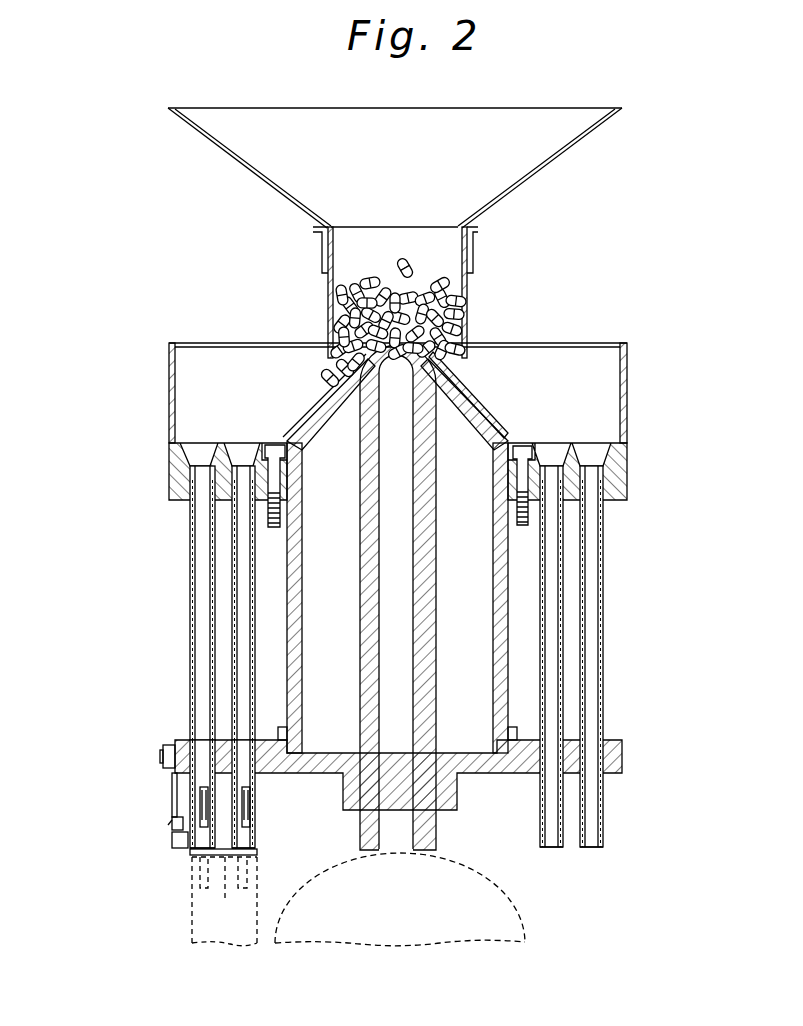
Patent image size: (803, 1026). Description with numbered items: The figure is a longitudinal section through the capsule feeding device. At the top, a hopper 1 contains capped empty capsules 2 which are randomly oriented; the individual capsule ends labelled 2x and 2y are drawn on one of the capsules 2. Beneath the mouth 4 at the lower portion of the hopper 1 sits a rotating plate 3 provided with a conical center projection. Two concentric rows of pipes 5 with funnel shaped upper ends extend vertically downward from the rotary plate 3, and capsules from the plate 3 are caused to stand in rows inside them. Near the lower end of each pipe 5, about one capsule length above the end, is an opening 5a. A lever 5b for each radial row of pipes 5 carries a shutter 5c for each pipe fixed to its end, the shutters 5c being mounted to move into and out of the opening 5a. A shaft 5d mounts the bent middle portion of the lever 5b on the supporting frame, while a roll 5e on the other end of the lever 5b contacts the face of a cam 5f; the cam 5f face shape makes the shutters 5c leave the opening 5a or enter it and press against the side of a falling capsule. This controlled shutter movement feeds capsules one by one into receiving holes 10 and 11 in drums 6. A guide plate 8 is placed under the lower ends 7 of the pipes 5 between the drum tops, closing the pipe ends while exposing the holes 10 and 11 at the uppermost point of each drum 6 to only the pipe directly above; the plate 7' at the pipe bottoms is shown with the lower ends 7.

The hopper 1 is at (538, 152).
The capped empty capsules 2 is at (412, 273).
The capsule cap 2x is at (413, 264).
The capsule body 2y is at (412, 276).
The rotating plate 3 is at (470, 398).
The mouth 4 is at (452, 366).
The pipes 5 is at (232, 590).
The opening 5a is at (193, 763).
The lever 5b is at (172, 783).
The shutter 5c is at (204, 800).
The shaft 5d is at (163, 753).
The roll 5e is at (172, 823).
The cam 5f is at (173, 848).
The drum 6 is at (192, 930).
The lower end of pipe 7 is at (203, 900).
The bottom plate 7' is at (248, 866).
The guide plate 8 is at (225, 860).
The receiving hole 10 is at (205, 893).
The receiving hole 11 is at (247, 893).